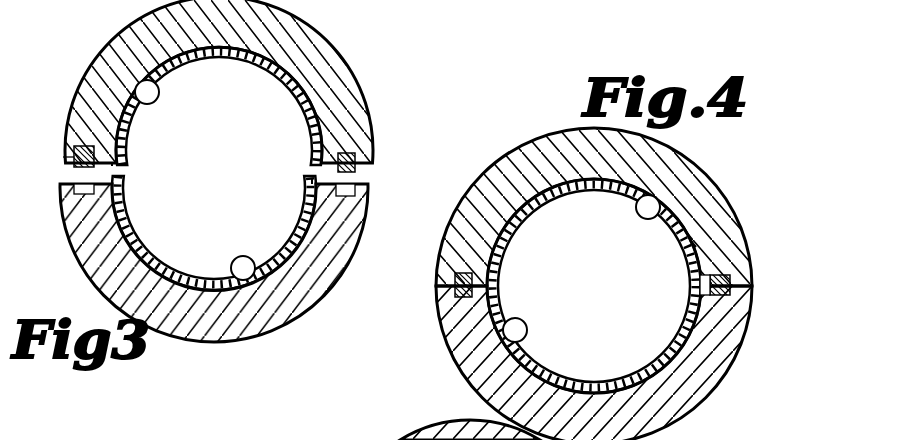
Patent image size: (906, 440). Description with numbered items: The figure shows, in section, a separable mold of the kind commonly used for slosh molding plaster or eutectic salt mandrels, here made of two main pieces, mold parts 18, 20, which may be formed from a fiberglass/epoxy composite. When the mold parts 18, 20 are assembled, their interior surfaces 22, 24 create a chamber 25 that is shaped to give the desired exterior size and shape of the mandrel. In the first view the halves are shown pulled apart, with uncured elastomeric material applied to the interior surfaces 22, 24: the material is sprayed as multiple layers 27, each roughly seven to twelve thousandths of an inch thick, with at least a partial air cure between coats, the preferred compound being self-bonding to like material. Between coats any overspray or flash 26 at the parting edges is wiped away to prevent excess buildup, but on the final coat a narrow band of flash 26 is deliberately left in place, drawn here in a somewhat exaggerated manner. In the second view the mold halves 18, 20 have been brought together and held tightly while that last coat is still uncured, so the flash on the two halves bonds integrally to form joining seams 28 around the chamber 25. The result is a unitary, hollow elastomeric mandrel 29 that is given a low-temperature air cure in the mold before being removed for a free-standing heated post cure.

In FIG. 3, the mold part 18 is at (90, 250).
In FIG. 4, the mold part 18 is at (700, 370).
In FIG. 3, the mold part 20 is at (333, 77).
In FIG. 4, the mold part 20 is at (483, 188).
In FIG. 3, the interior surface 22 is at (260, 277).
In FIG. 4, the interior surface 22 is at (455, 345).
In FIG. 3, the interior surface 24 is at (118, 46).
In FIG. 4, the interior surface 24 is at (680, 200).
In FIG. 3, the chamber 25 is at (283, 143).
In FIG. 4, the chamber 25 is at (553, 227).
In FIG. 3, the overspray or flash 26 is at (112, 162).
In FIG. 3, the layer of elastomeric material 27 is at (260, 57).
In FIG. 4, the joining seam 28 is at (500, 277).
In FIG. 4, the elastomeric mandrel 29 is at (692, 243).